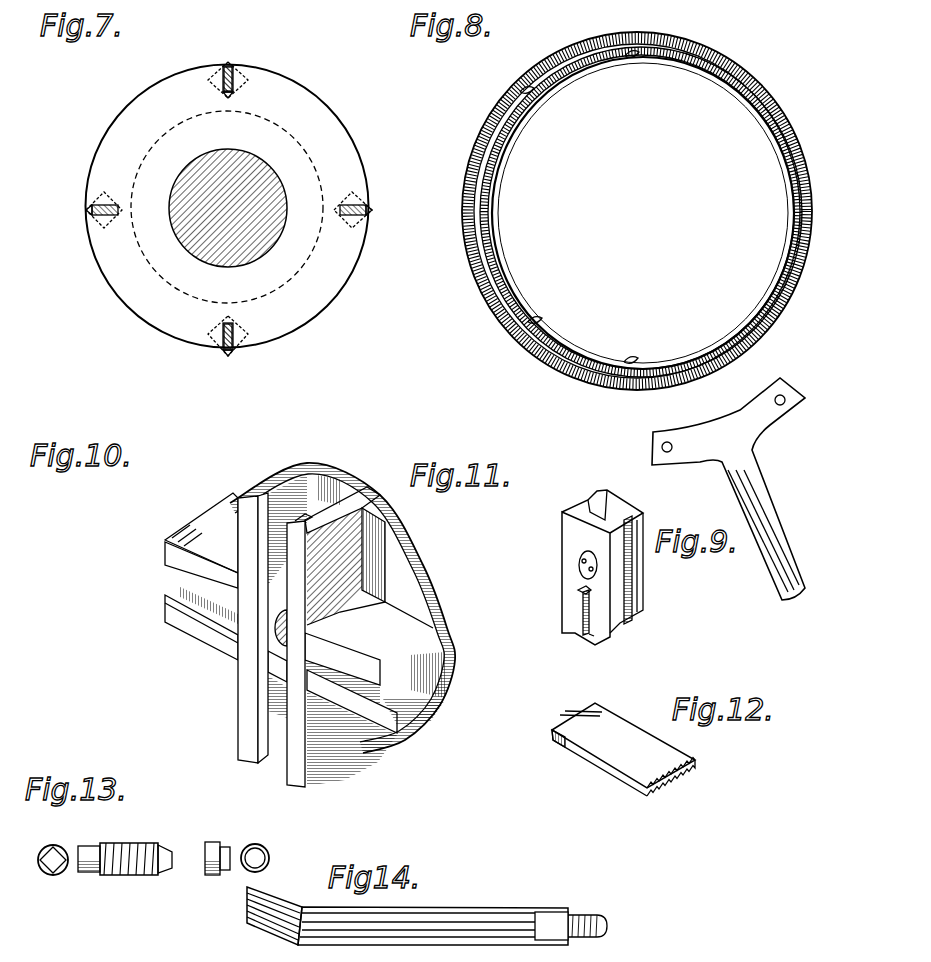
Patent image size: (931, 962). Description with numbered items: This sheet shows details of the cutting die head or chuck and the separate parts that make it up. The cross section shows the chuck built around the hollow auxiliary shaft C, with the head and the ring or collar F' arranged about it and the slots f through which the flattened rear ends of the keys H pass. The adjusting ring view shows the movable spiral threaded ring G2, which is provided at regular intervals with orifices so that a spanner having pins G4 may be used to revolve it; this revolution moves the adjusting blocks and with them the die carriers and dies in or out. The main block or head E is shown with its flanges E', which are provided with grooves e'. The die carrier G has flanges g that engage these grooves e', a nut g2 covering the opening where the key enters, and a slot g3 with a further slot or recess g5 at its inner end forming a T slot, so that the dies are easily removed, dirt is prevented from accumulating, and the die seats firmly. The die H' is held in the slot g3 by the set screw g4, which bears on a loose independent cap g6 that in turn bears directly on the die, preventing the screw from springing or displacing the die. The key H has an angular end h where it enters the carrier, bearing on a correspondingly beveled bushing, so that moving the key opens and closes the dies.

In FIG. 7, the disk flange F' is at (227, 206).
In FIG. 7, the auxiliary shaft C is at (255, 243).
In FIG. 7, the slots f is at (233, 92).
In FIG. 7, the keys or pins H is at (231, 220).
In FIG. 14, the keys or pins H is at (452, 911).
In FIG. 8, the spiral threaded ring G2 is at (780, 278).
In FIG. 8, the nut g2 is at (630, 60).
In FIG. 11, the nut g2 is at (580, 568).
In FIG. 8, the flanges g is at (626, 358).
In FIG. 11, the flanges g is at (640, 565).
In FIG. 9, the pins G4 is at (776, 401).
In FIG. 10, the main block or head E is at (342, 605).
In FIG. 10, the flanges E' is at (305, 630).
In FIG. 10, the grooves e' is at (347, 640).
In FIG. 11, the die carriers G is at (580, 540).
In FIG. 11, the slot or recess g5 is at (564, 610).
In FIG. 11, the slots g3 is at (589, 638).
In FIG. 12, the dies H' is at (623, 749).
In FIG. 13, the set screws g4 is at (60, 872).
In FIG. 13, the loose independent cap g6 is at (248, 868).
In FIG. 14, the angular end h is at (282, 935).